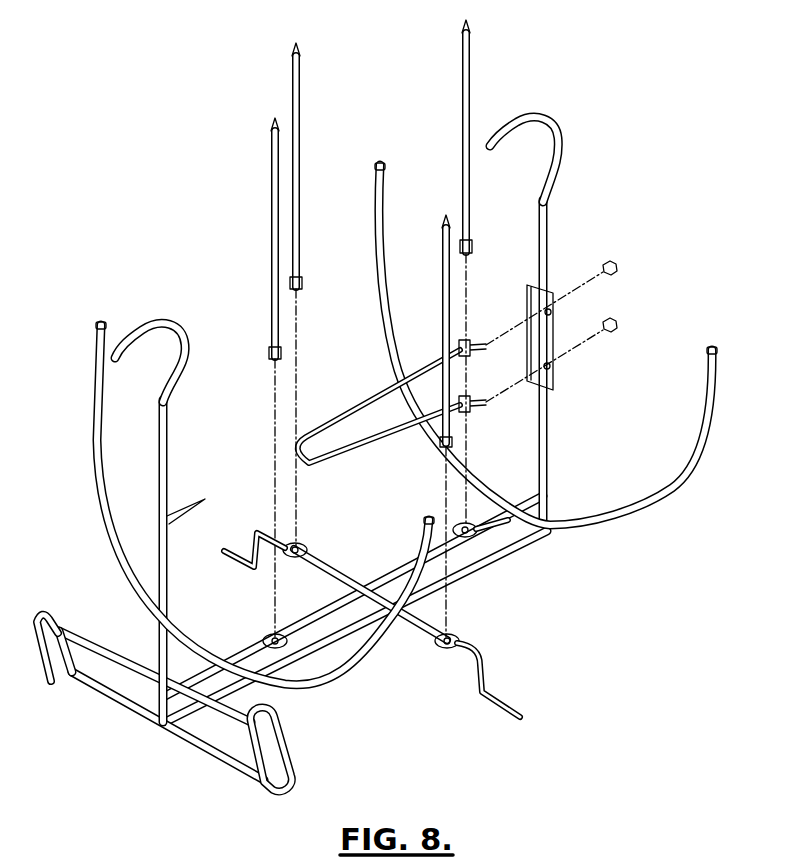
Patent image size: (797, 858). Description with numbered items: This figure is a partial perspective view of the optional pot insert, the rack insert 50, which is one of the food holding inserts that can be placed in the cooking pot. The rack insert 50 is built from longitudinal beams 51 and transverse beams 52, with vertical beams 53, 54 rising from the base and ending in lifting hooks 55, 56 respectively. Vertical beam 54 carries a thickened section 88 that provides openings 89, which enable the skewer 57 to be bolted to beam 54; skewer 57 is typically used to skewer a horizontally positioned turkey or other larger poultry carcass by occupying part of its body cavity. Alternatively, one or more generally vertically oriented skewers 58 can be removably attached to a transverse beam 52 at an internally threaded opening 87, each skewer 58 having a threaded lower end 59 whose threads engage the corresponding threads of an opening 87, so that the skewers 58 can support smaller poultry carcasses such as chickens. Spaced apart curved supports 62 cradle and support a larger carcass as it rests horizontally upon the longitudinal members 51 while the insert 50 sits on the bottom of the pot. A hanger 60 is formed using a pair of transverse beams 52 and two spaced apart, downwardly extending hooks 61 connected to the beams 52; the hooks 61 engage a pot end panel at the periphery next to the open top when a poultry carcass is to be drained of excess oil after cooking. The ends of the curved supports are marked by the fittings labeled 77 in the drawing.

The rack insert 50 is at (612, 212).
The longitudinal beams 51 is at (328, 605).
The transverse beams 52 is at (350, 583).
The vertical beam 53 is at (168, 596).
The vertical beam 54 is at (548, 435).
The lifting hook 55 is at (160, 324).
The lifting hook 56 is at (556, 128).
The skewer 57 is at (372, 396).
The skewers 58 is at (301, 86).
The threaded lower end 59 is at (302, 282).
The hanger 60 is at (109, 621).
The hooks 61 is at (44, 680).
The curved supports 62 is at (93, 450).
The hoop end 77 is at (100, 320).
The internally threaded opening 87 is at (302, 546).
The thickened section 88 is at (548, 288).
The openings 89 is at (550, 330).